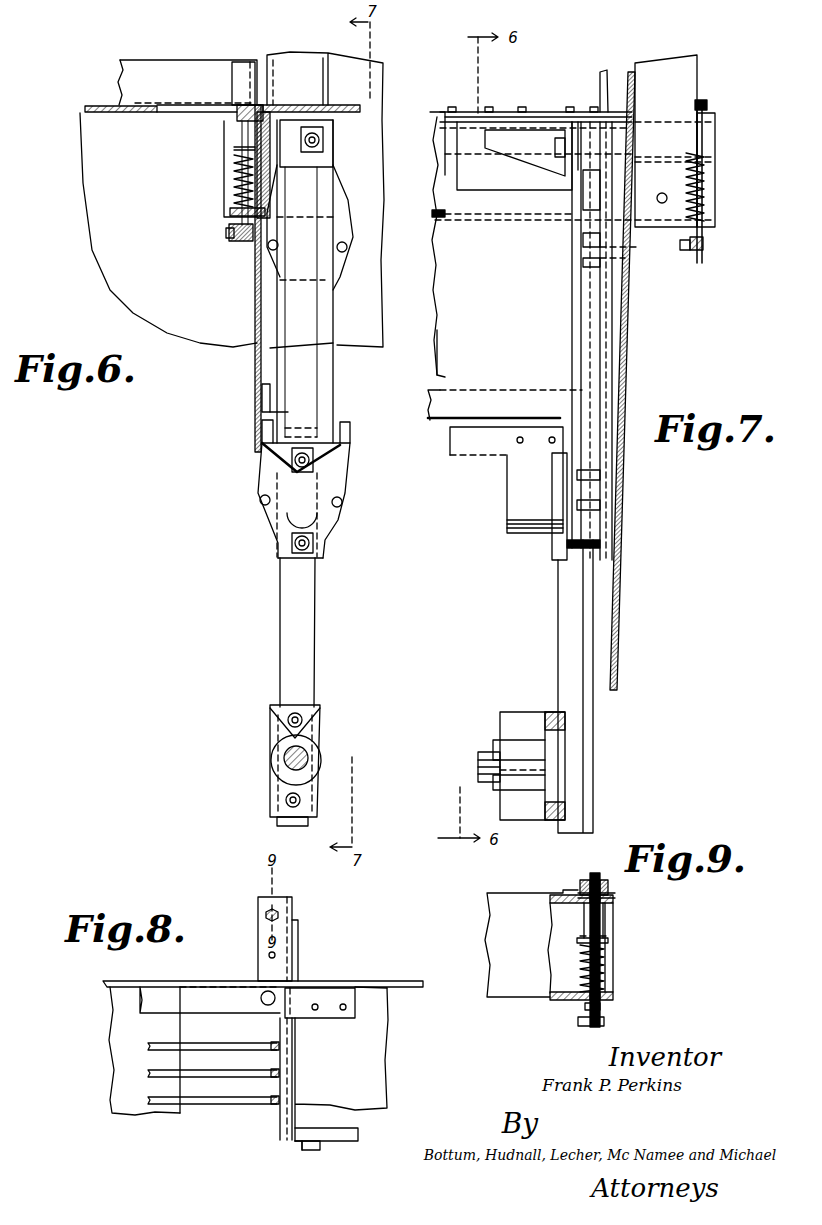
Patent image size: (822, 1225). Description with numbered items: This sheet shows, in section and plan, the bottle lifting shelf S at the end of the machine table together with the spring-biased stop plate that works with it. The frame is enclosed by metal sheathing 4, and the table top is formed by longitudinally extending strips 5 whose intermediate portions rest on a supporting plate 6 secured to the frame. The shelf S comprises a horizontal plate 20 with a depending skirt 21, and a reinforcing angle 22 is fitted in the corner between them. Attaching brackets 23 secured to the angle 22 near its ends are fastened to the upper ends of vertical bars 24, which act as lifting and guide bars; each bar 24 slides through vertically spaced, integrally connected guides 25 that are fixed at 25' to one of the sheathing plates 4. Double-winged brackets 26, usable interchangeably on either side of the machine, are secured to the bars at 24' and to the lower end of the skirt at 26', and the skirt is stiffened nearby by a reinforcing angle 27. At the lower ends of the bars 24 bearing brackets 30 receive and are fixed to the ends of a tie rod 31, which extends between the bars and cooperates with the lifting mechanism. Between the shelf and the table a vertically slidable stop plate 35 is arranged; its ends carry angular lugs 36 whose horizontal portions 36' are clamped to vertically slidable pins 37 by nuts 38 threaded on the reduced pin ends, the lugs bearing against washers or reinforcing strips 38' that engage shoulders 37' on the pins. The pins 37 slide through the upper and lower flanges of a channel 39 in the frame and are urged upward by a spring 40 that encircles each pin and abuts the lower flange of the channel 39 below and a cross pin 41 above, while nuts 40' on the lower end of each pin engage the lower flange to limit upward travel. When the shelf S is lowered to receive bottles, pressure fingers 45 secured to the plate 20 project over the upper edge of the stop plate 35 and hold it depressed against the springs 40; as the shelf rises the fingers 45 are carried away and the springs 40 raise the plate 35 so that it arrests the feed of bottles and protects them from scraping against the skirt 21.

In FIG. 7, the sheathing 4 is at (622, 312).
In FIG. 6, the strips 5 is at (170, 105).
In FIG. 7, the strips 5 is at (490, 112).
In FIG. 8, the strips 5 is at (215, 1070).
In FIG. 6, the supporting plate 6 is at (168, 230).
In FIG. 6, the bottle lifting shelf S is at (352, 105).
In FIG. 6, the horizontal plate 20 is at (317, 105).
In FIG. 8, the horizontal plate 20 is at (362, 1083).
In FIG. 6, the depending skirt 21 is at (256, 273).
In FIG. 7, the depending skirt 21 is at (472, 353).
In FIG. 8, the depending skirt 21 is at (295, 1143).
In FIG. 6, the reinforcing angle 22 is at (290, 105).
In FIG. 7, the reinforcing angle 22 is at (472, 118).
In FIG. 8, the reinforcing angle 22 is at (370, 1128).
In FIG. 6, the attaching brackets 23 is at (322, 142).
In FIG. 7, the attaching brackets 23 is at (525, 145).
In FIG. 8, the attaching brackets 23 is at (355, 1141).
In FIG. 6, the vertical bars 24 is at (329, 281).
In FIG. 7, the vertical bars 24 is at (557, 477).
In FIG. 6, the bracket fastening to bars 24' is at (324, 631).
In FIG. 7, the bracket fastening to bars 24' is at (549, 516).
In FIG. 6, the guides 25 is at (337, 361).
In FIG. 7, the guides 25 is at (539, 341).
In FIG. 6, the guide fastening 25' is at (319, 387).
In FIG. 7, the guide fastening 25' is at (537, 384).
In FIG. 6, the brackets 26 is at (324, 499).
In FIG. 7, the brackets 26 is at (505, 483).
In FIG. 6, the bracket fastening to skirt 26' is at (276, 431).
In FIG. 7, the bracket fastening to skirt 26' is at (506, 441).
In FIG. 6, the reinforcing angle 27 is at (260, 398).
In FIG. 7, the reinforcing angle 27 is at (490, 405).
In FIG. 8, the reinforcing angle 27 is at (308, 1150).
In FIG. 6, the bearing brackets 30 is at (315, 740).
In FIG. 7, the bearing brackets 30 is at (510, 720).
In FIG. 6, the tie rod 31 is at (284, 760).
In FIG. 7, the tie rod 31 is at (485, 765).
In FIG. 6, the stop plate 35 is at (250, 135).
In FIG. 7, the stop plate 35 is at (442, 128).
In FIG. 8, the stop plate 35 is at (280, 1126).
In FIG. 9, the stop plate 35 is at (500, 903).
In FIG. 8, the angular lugs 36 is at (291, 925).
In FIG. 9, the angular lugs 36 is at (581, 878).
In FIG. 9, the horizontal portions 36' is at (623, 885).
In FIG. 6, the pins 37 is at (212, 173).
In FIG. 7, the pins 37 is at (724, 186).
In FIG. 8, the pins 37 is at (245, 939).
In FIG. 9, the pins 37 is at (626, 926).
In FIG. 9, the shoulders 37' is at (626, 918).
In FIG. 6, the nuts 38 is at (255, 118).
In FIG. 7, the nuts 38 is at (698, 141).
In FIG. 8, the nuts 38 is at (248, 896).
In FIG. 9, the nuts 38 is at (603, 940).
In FIG. 9, the washers or reinforcing strips 38' is at (677, 888).
In FIG. 6, the channel 39 is at (230, 211).
In FIG. 7, the channel 39 is at (440, 218).
In FIG. 8, the channel 39 is at (287, 1105).
In FIG. 9, the channel 39 is at (553, 1000).
In FIG. 6, the spring 40 is at (216, 181).
In FIG. 9, the spring 40 is at (626, 965).
In FIG. 6, the nuts 40' is at (209, 251).
In FIG. 7, the nuts 40' is at (717, 252).
In FIG. 9, the nuts 40' is at (621, 1012).
In FIG. 6, the cross pin 41 is at (237, 148).
In FIG. 9, the cross pin 41 is at (585, 937).
In FIG. 6, the pressure fingers 45 is at (300, 105).
In FIG. 7, the pressure fingers 45 is at (598, 108).
In FIG. 8, the pressure fingers 45 is at (332, 1000).